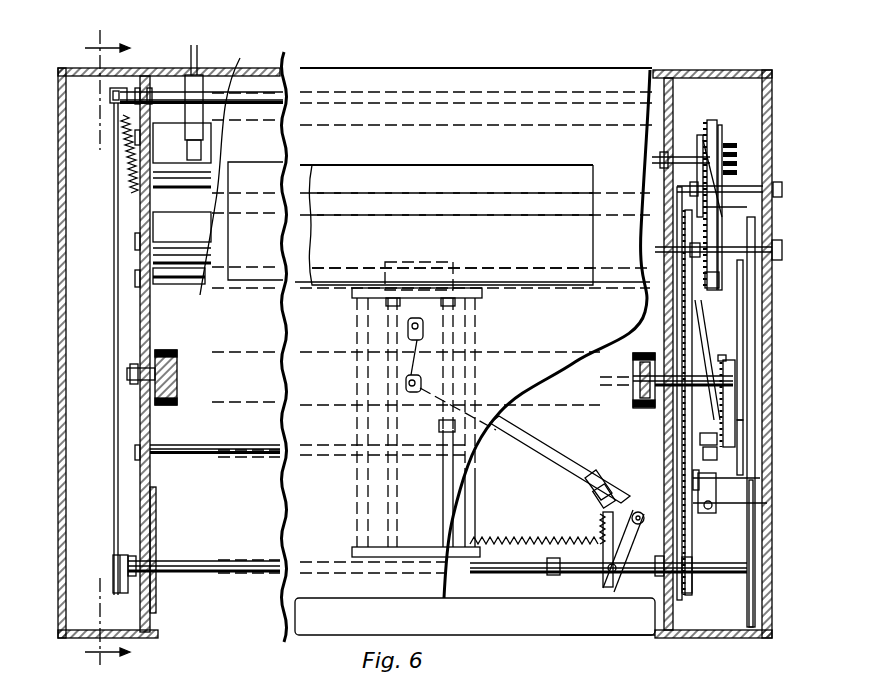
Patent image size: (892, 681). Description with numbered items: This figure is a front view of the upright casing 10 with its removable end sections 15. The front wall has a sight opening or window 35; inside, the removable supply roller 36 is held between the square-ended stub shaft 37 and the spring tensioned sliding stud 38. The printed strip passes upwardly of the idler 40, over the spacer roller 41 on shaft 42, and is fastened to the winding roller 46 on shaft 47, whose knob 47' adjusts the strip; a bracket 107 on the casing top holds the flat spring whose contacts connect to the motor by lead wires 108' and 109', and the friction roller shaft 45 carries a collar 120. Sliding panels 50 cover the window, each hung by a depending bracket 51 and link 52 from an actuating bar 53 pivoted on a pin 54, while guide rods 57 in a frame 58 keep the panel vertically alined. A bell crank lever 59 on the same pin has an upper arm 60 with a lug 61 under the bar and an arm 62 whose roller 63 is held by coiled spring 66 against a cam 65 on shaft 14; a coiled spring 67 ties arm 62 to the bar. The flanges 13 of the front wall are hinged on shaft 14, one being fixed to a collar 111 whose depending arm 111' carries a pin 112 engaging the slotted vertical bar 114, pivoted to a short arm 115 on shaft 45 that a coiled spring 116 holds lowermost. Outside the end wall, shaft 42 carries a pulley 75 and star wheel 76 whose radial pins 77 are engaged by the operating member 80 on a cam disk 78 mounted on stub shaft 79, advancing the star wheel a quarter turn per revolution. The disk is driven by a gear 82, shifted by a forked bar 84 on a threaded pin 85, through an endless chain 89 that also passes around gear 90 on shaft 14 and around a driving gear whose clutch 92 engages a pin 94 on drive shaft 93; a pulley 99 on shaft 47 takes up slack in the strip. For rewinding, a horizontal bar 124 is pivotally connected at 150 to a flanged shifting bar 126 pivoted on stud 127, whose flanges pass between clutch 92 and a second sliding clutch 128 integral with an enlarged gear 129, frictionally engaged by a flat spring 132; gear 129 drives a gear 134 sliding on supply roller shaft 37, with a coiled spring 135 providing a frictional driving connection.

The casing 10 is at (480, 73).
The flanges 13 is at (156, 500).
The shaft 14 is at (573, 574).
The end sections 15 is at (757, 53).
The sight opening or window 35 is at (487, 162).
The supply roller 36 is at (178, 356).
The stub shaft 37 is at (650, 361).
The sliding stud 38 is at (124, 369).
The idler 40 is at (181, 285).
The spacer roller 41 is at (213, 140).
The shaft 42 is at (693, 157).
The shaft 45 is at (225, 97).
The winding roller 46 is at (198, 228).
The shaft 47 is at (706, 260).
The knob 47' is at (790, 238).
The doors or panels 50 is at (540, 178).
The bracket 51 is at (437, 265).
The link 52 is at (425, 338).
The actuating bar 53 is at (528, 450).
The pin 54 is at (636, 511).
The guide rods 57 is at (358, 497).
The frame 58 is at (474, 377).
The bell crank lever 59 is at (597, 522).
The upper arm 60 is at (616, 492).
The lug 61 is at (588, 502).
The arm 62 is at (664, 548).
The roller 63 is at (612, 590).
The cam 65 is at (634, 635).
The coiled spring 66 is at (521, 541).
The coiled spring 67 is at (603, 531).
The pulley 75 is at (718, 121).
The star wheel 76 is at (722, 133).
The pins 77 is at (733, 149).
The cam disk 78 is at (718, 206).
The stub shaft 79 is at (748, 220).
The operating member 80 is at (733, 186).
The gear 82 is at (683, 212).
The forked bar 84 is at (678, 152).
The threaded pin 85 is at (748, 186).
The endless chain 89 is at (690, 296).
The gear 90 is at (690, 588).
The clutch 92 is at (698, 470).
The drive shaft 93 is at (196, 448).
The pin 94 is at (708, 454).
The pulley 99 is at (716, 281).
The bracket 107 is at (193, 90).
The lead wire 108' is at (201, 68).
The lead wire 109' is at (191, 48).
The collar 111 is at (204, 549).
The depending arm 111' is at (165, 574).
The pin 112 is at (112, 582).
The vertical bar 114 is at (114, 180).
The short arm 115 is at (111, 102).
The coiled spring 116 is at (122, 150).
The collar 120 is at (789, 665).
The horizontal bar 124 is at (700, 512).
The shifting bar 126 is at (706, 335).
The stud 127 is at (753, 314).
The sliding clutch 128 is at (715, 444).
The gear 129 is at (725, 504).
The flat spring 132 is at (745, 423).
The gear 134 is at (735, 367).
The coiled spring 135 is at (735, 394).
The pivotal connection 150 is at (764, 512).